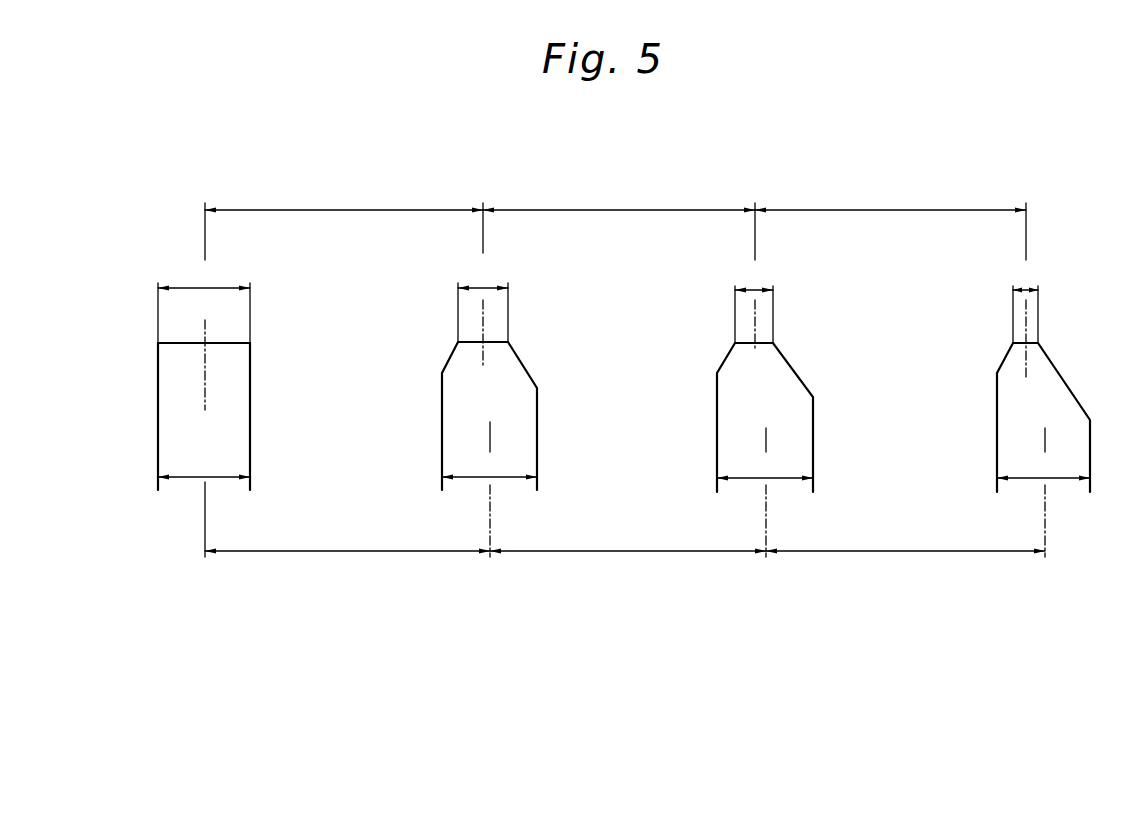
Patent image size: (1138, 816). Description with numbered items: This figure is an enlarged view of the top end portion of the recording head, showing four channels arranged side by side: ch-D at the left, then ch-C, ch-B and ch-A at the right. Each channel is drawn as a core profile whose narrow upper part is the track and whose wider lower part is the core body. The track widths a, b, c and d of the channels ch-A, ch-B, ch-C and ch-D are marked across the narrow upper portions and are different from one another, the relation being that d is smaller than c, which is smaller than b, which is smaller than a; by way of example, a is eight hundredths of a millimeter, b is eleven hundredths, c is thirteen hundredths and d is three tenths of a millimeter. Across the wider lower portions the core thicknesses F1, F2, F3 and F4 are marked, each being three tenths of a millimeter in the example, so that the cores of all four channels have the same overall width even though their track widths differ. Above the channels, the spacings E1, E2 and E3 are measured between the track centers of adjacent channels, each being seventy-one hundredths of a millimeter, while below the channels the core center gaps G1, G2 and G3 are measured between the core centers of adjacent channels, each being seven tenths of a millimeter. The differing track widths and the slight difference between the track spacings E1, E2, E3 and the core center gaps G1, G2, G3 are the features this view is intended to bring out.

The channel A ch-A is at (995, 447).
The channel B ch-B is at (815, 447).
The channel C ch-C is at (538, 447).
The channel D ch-D is at (252, 447).
The track width of ch-A a is at (1025, 278).
The track width of ch-B b is at (754, 278).
The track width of ch-C c is at (483, 277).
The track width of ch-D d is at (204, 277).
The core thickness F1 is at (1043, 467).
The core thickness F2 is at (765, 467).
The core thickness F3 is at (489, 466).
The core thickness F4 is at (204, 466).
The track spacing E1 is at (890, 222).
The track spacing E2 is at (619, 222).
The track spacing E3 is at (344, 222).
The core center gap G1 is at (905, 521).
The core center gap G2 is at (628, 521).
The core center gap G3 is at (347, 519).